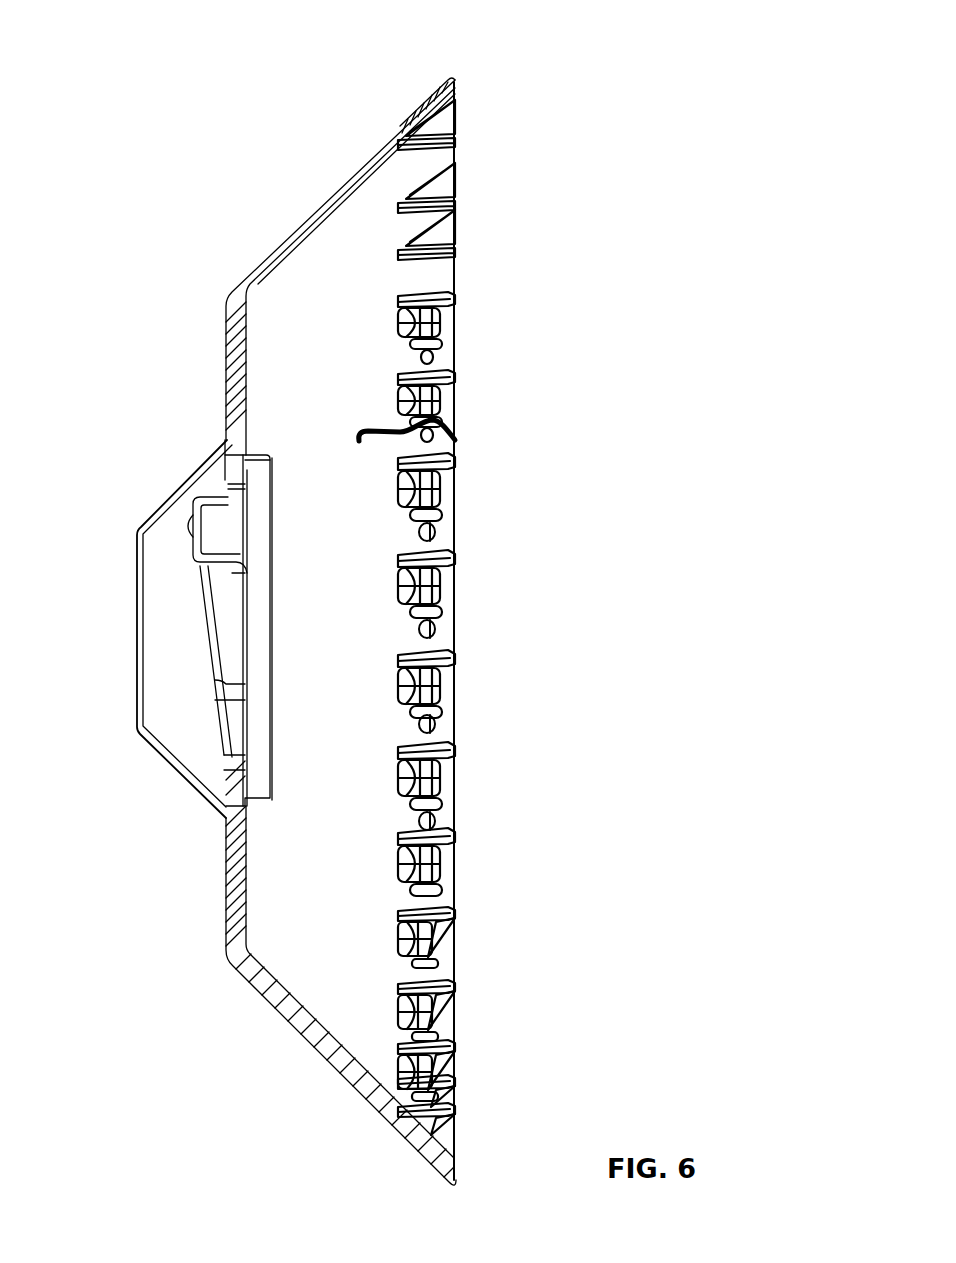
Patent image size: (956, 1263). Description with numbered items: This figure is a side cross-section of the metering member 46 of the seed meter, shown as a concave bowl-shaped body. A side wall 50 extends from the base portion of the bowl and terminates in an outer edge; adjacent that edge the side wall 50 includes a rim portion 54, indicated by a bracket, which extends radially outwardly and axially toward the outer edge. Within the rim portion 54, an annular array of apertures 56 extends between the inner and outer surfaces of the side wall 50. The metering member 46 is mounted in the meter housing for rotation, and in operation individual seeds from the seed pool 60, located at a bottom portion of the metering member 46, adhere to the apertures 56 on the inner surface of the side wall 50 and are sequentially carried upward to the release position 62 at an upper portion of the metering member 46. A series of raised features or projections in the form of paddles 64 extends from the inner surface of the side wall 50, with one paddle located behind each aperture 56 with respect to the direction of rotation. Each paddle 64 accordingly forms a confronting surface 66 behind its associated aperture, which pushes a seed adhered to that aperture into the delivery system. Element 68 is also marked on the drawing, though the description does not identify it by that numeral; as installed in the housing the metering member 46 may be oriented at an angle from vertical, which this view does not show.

The metering member 46 is at (88, 218).
The side wall 50 is at (252, 277).
The rim portion 54 is at (446, 379).
The apertures 56 is at (438, 531).
The seed pool 60 is at (503, 1050).
The release position 62 is at (424, 88).
The paddles 64 is at (455, 318).
The confronting surface 66 is at (447, 284).
The reflector 68 is at (445, 673).